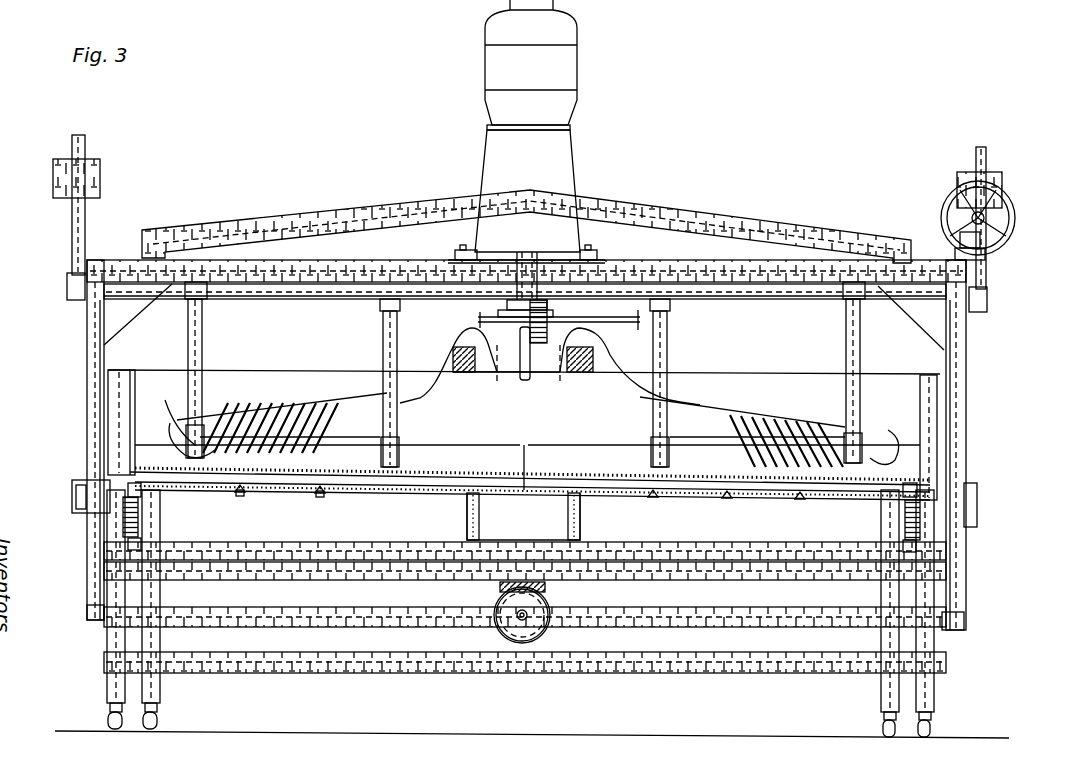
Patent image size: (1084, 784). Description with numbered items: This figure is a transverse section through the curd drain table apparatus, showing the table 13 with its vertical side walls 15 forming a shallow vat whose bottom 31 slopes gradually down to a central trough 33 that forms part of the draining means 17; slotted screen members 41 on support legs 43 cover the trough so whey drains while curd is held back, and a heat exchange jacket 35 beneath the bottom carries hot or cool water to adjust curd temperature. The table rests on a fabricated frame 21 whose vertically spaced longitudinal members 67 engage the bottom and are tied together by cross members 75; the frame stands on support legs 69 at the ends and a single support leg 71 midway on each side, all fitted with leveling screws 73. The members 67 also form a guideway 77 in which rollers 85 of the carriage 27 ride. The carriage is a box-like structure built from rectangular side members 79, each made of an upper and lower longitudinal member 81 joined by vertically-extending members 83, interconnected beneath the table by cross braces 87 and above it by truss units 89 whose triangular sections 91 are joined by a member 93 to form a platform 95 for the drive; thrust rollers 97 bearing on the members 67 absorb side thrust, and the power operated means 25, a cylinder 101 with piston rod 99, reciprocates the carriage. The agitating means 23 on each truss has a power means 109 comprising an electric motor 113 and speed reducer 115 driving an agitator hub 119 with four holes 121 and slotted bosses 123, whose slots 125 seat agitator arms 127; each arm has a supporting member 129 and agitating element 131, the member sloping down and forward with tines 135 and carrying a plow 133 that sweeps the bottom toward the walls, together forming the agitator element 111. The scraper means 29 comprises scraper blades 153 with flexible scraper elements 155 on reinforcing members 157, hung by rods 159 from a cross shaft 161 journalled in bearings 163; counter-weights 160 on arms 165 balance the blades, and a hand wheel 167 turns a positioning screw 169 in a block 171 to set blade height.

The table 13 is at (284, 372).
The side walls 15 is at (136, 375).
The draining means 17 is at (522, 486).
The frame 21 is at (913, 680).
The agitating means 23 is at (572, 72).
The power operated means 25 is at (540, 642).
The carriage 27 is at (352, 208).
The scraper means 29 is at (400, 448).
The bottom 31 is at (735, 500).
The central trough 33 is at (523, 516).
The heat exchange jacket 35 is at (362, 500).
The slotted screen members 41 is at (558, 490).
The support legs 43 is at (466, 526).
The longitudinally extending members 67 is at (186, 494).
The support legs 69 is at (160, 638).
The support leg 71 is at (106, 670).
The leveling screws 73 is at (108, 720).
The cross members 75 is at (243, 545).
The guideway 77 is at (140, 518).
The rectangular side members 79 is at (84, 328).
The longitudinal member 81 is at (98, 260).
The vertically-extending members 83 is at (88, 360).
The rollers 85 is at (140, 518).
The cross braces 87 is at (318, 580).
The truss units 89 is at (707, 272).
The triangular sections 91 is at (752, 218).
The member 93 is at (440, 272).
The platform 95 is at (580, 262).
The thrust rollers 97 is at (95, 490).
The piston rod 99 is at (550, 628).
The cylinder 101 is at (510, 630).
The power means 109 is at (512, 168).
The agitator element 111 is at (774, 410).
The electric motor 113 is at (512, 75).
The speed reducer 115 is at (490, 155).
The agitator hub 119 is at (540, 365).
The holes 121 is at (500, 372).
The bosses 123 is at (466, 372).
The slot 125 is at (462, 372).
The agitator arms 127 is at (450, 352).
The supporting member 129 is at (352, 400).
The agitating element 131 is at (318, 418).
The plow 133 is at (170, 430).
The tines 135 is at (300, 450).
The scraper blades 153 is at (460, 452).
The scraper element 155 is at (300, 493).
The reinforcing member 157 is at (526, 463).
The rods 159 is at (203, 320).
The counter-weights 160 is at (65, 176).
The cross shaft 161 is at (790, 300).
The bearings 163 is at (128, 302).
The arm 165 is at (70, 224).
The hand wheel 167 is at (1008, 192).
The positioning screw 169 is at (1000, 238).
The block 171 is at (962, 250).